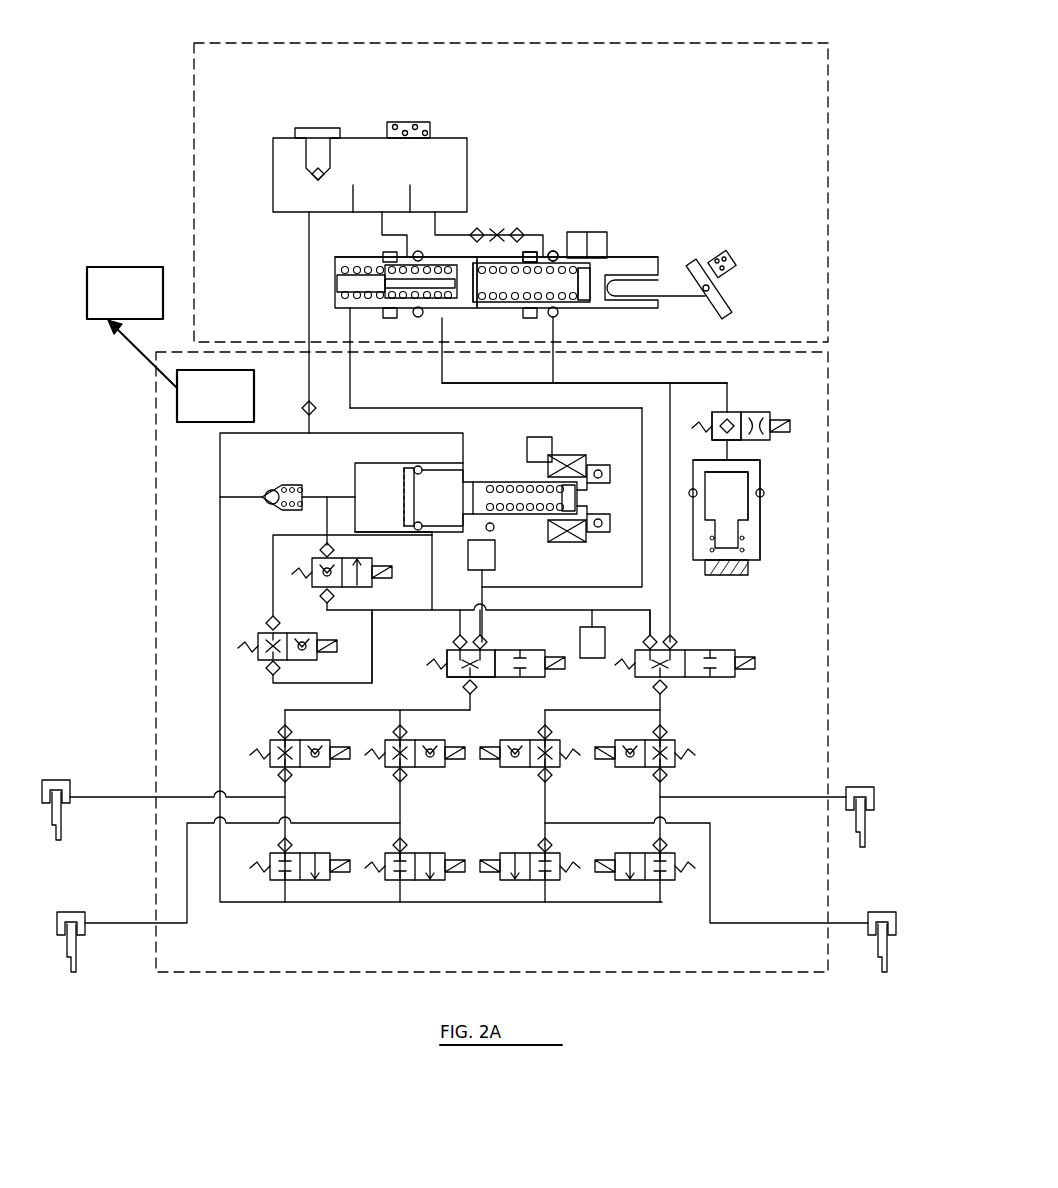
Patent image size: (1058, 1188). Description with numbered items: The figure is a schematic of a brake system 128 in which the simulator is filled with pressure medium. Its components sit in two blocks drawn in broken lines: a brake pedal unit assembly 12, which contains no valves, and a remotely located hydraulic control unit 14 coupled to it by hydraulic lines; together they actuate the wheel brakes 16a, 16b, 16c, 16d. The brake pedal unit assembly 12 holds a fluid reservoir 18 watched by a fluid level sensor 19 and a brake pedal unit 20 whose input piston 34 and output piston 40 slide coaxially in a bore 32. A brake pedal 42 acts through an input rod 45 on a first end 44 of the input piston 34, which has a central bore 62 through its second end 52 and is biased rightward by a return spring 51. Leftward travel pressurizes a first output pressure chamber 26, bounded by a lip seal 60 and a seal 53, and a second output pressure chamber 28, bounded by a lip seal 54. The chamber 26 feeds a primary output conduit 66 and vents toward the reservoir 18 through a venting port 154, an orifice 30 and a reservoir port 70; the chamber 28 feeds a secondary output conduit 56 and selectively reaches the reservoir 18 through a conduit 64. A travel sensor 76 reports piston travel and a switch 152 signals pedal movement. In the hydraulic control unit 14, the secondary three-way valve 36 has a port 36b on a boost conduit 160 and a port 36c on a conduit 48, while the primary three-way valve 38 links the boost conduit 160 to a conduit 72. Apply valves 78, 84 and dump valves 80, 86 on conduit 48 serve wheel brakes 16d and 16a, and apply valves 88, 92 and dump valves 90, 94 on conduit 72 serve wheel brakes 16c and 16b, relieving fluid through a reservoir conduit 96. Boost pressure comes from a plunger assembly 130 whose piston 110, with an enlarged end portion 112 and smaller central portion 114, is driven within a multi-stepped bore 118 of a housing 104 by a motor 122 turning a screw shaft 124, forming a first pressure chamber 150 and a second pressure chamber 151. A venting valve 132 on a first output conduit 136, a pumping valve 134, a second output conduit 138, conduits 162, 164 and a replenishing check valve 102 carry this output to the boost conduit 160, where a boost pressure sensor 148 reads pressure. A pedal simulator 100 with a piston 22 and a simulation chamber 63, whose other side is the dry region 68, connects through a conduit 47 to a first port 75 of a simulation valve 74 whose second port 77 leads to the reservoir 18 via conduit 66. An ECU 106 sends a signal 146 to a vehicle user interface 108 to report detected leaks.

The brake pedal unit assembly 12 is at (828, 250).
The hydraulic control unit 14 is at (828, 500).
The wheel brake 16a is at (88, 927).
The wheel brake 16b is at (896, 930).
The wheel brake 16c is at (874, 803).
The wheel brake 16d is at (72, 790).
The fluid reservoir 18 is at (290, 190).
The fluid level sensor 19 is at (430, 122).
The brake pedal unit 20 is at (628, 238).
The piston 22 is at (737, 505).
The first output pressure chamber 26 is at (556, 255).
The second output pressure chamber 28 is at (335, 300).
The orifice 30 is at (497, 230).
The bore 32 is at (476, 306).
The input piston 34 is at (640, 272).
The secondary three-way valve 36 is at (515, 652).
The port 36b is at (450, 677).
The port 36c is at (477, 688).
The primary three-way valve 38 is at (736, 653).
The output piston 40 is at (584, 350).
The brake pedal 42 is at (729, 305).
The first end 44 is at (655, 340).
The input rod 45 is at (700, 292).
The conduit 47 is at (730, 458).
The conduit 48 is at (325, 712).
The return spring 51 is at (520, 232).
The second end 52 is at (505, 302).
The seal 53 is at (496, 393).
The lip seal 54 is at (350, 360).
The secondary output conduit 56 is at (309, 405).
The lip seal 60 is at (590, 343).
The central bore 62 is at (565, 300).
The simulation chamber 63 is at (736, 464).
The conduit 64 is at (382, 225).
The primary output conduit 66 is at (477, 228).
The dry region 68 is at (742, 565).
The reservoir port 70 is at (434, 216).
The conduit 72 is at (664, 712).
The simulation valve 74 is at (745, 412).
The first port 75 is at (694, 436).
The travel sensor 76 is at (592, 235).
The second port 77 is at (722, 412).
The apply valve 78 is at (300, 767).
The dump valve 80 is at (300, 880).
The apply valve 84 is at (413, 740).
The dump valve 86 is at (410, 880).
The apply valve 88 is at (648, 768).
The dump valve 90 is at (660, 880).
The apply valve 92 is at (538, 768).
The dump valve 94 is at (560, 880).
The reservoir conduit 96 is at (220, 480).
The pedal simulator 100 is at (768, 547).
The replenishing check valve 102 is at (266, 492).
The housing 104 is at (370, 463).
The ECU 106 is at (215, 396).
The vehicle user interface 108 is at (125, 293).
The piston 110 is at (428, 468).
The enlarged end portion 112 is at (400, 480).
The central portion 114 is at (455, 505).
The multi-stepped bore 118 is at (446, 470).
The motor 122 is at (586, 462).
The screw shaft 124 is at (512, 482).
The system 128 is at (838, 100).
The plunger assembly 130 is at (518, 445).
The venting valve 132 is at (258, 655).
The pumping valve 134 is at (312, 570).
The first output conduit 136 is at (320, 495).
The second output conduit 138 is at (351, 647).
The signal 146 is at (130, 365).
The boost pressure sensor 148 is at (590, 653).
The first pressure chamber 150 is at (360, 535).
The second pressure chamber 151 is at (494, 530).
The switch 152 is at (730, 258).
The venting port 154 is at (540, 262).
The boost conduit 160 is at (433, 620).
The conduit 162 is at (270, 585).
The conduit 164 is at (275, 685).